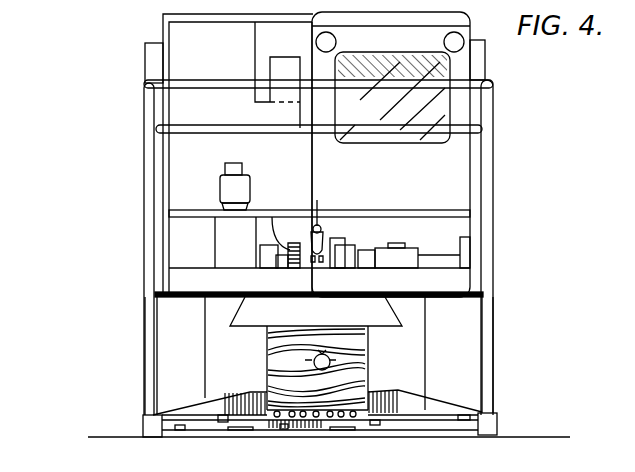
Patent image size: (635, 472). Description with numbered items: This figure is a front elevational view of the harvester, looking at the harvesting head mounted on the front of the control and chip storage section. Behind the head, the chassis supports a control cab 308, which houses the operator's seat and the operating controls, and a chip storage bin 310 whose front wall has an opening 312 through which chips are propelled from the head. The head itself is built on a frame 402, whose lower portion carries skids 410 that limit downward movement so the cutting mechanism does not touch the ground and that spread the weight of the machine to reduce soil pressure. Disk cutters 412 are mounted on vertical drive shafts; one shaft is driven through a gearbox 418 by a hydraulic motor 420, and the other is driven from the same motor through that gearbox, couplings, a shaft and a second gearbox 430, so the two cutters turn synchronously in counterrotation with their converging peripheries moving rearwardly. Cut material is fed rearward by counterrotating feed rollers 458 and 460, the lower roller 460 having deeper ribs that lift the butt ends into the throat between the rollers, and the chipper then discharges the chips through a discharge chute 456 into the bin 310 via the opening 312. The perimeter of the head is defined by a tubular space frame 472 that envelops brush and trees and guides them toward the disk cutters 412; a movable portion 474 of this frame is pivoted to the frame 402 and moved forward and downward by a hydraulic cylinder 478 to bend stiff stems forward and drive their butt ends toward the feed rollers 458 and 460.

The control cab 308 is at (460, 63).
The chip storage bin 310 is at (162, 28).
The opening 312 is at (258, 48).
The frame 402 is at (477, 356).
The skids 410 is at (145, 425).
The disk cutters 412 is at (348, 425).
The gearbox 418 is at (228, 245).
The hydraulic motor 420 is at (228, 185).
The gearbox 430 is at (398, 242).
The discharge chute 456 is at (278, 117).
The upper feed roller 458 is at (277, 343).
The lower feed roller 460 is at (283, 397).
The tubular space frame 472 is at (488, 117).
The movable frame portion 474 is at (475, 160).
The hydraulic cylinder 478 is at (320, 236).